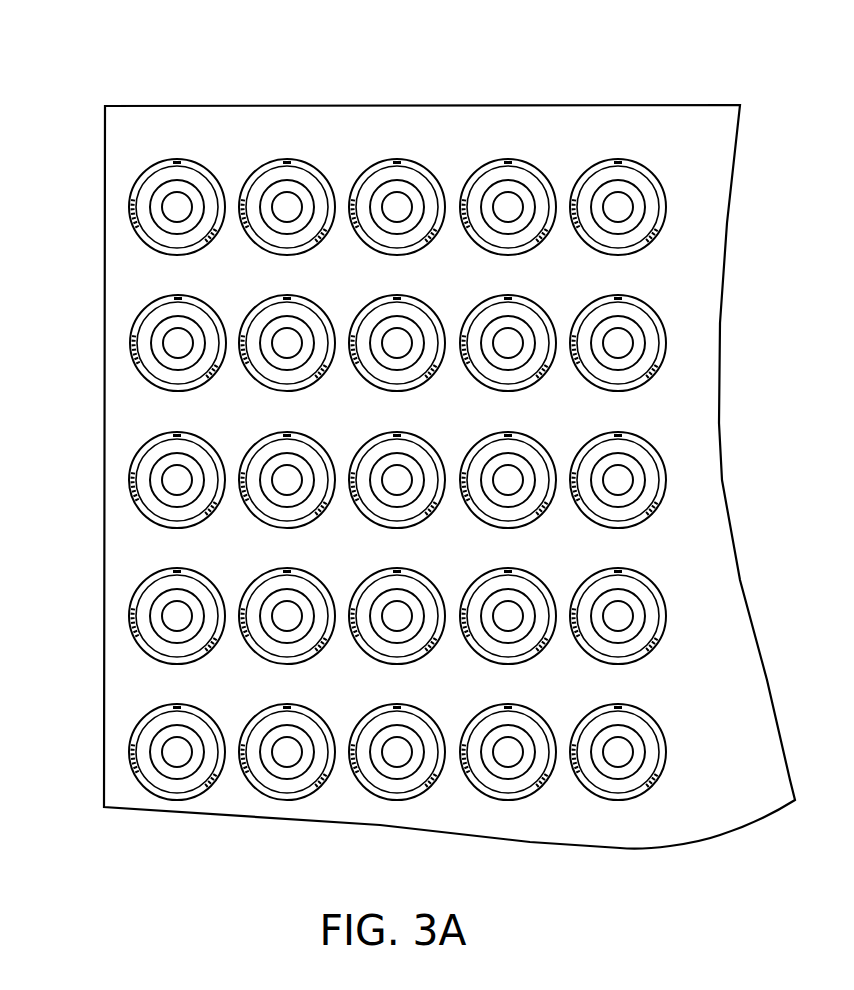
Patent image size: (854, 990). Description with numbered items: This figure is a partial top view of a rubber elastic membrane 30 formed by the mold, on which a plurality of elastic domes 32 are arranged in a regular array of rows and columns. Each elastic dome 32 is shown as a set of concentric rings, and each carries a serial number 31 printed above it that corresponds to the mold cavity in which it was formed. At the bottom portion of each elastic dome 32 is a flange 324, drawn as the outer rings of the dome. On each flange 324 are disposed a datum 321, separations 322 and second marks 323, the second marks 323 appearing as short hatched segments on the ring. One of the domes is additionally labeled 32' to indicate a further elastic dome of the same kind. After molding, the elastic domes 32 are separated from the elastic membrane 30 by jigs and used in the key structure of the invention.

The elastic membrane 30 is at (123, 97).
The serial number 31 is at (187, 133).
The elastic dome 32 is at (115, 335).
The datum 321 is at (155, 318).
The separations 322 is at (187, 389).
The second marks 323 is at (135, 327).
The flange 324 is at (145, 375).
The alternate well unit 32' is at (134, 499).